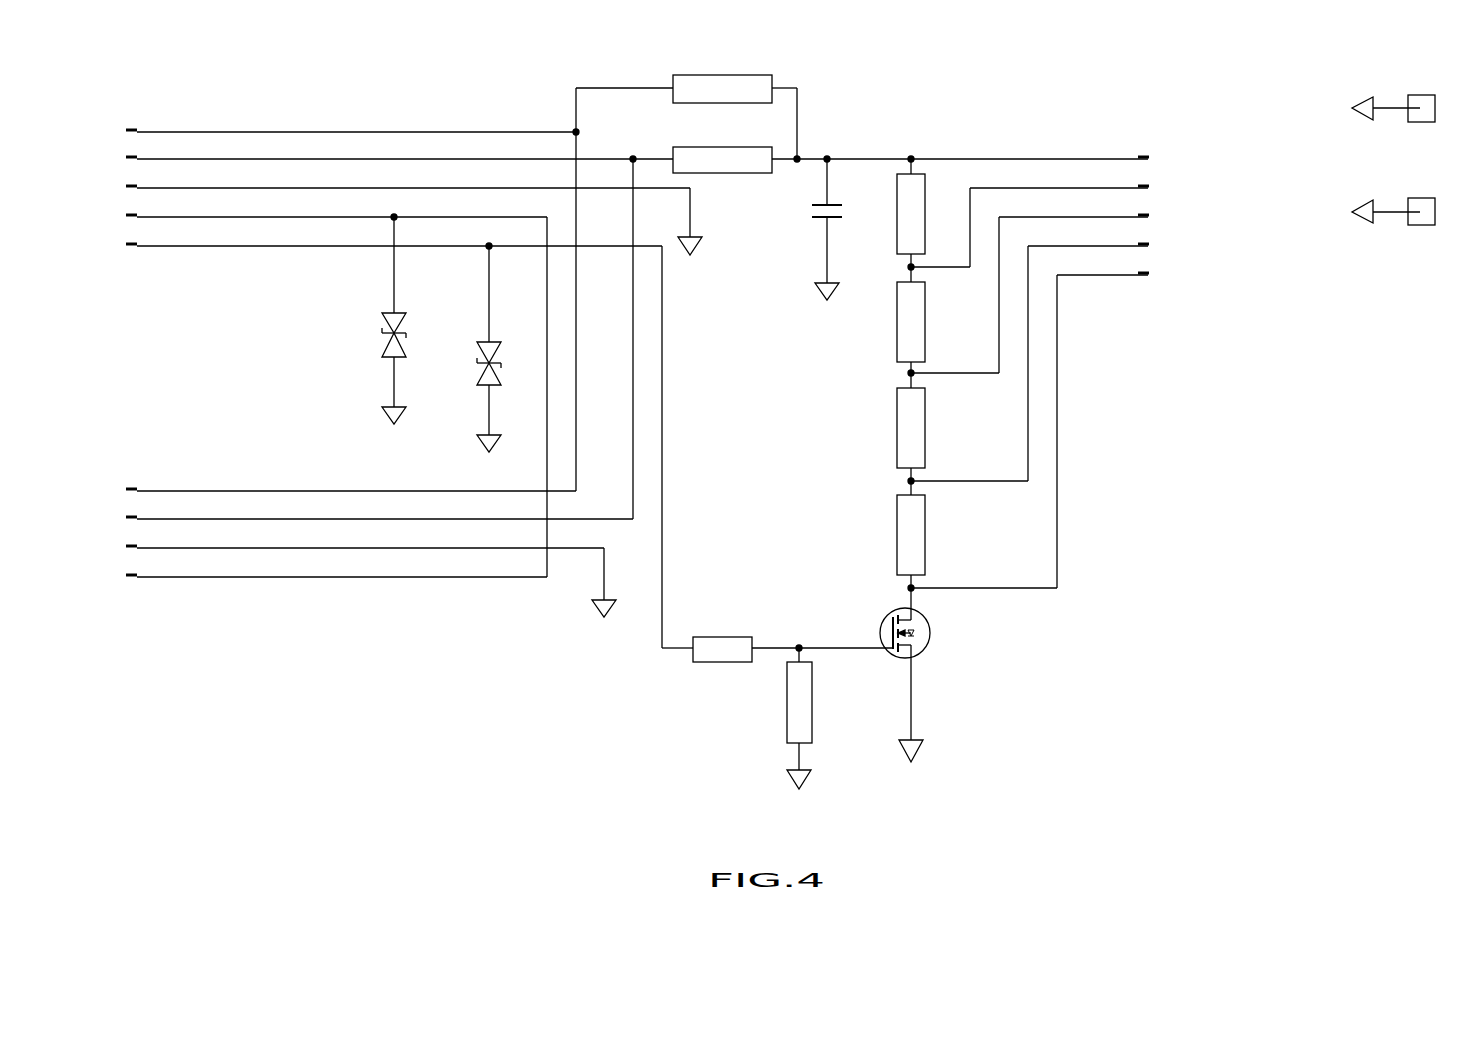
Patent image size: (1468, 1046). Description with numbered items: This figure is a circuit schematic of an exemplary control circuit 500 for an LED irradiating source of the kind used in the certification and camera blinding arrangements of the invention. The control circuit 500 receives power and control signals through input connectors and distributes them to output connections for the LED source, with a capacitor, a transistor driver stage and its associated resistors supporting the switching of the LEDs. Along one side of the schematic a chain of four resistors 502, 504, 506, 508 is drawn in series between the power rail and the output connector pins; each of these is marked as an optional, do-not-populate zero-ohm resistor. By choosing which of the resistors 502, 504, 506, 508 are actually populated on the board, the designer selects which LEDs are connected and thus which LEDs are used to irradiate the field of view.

The control circuit 500 is at (767, 426).
The resistor 502 is at (958, 167).
The resistor 504 is at (875, 331).
The resistor 506 is at (875, 428).
The resistor 508 is at (875, 535).